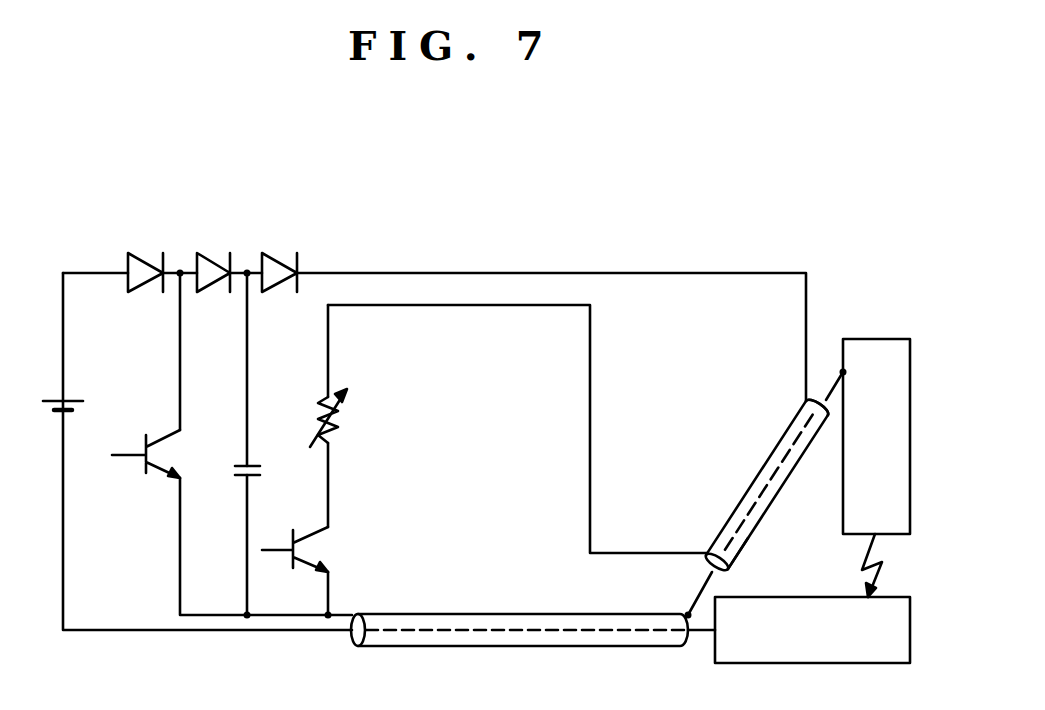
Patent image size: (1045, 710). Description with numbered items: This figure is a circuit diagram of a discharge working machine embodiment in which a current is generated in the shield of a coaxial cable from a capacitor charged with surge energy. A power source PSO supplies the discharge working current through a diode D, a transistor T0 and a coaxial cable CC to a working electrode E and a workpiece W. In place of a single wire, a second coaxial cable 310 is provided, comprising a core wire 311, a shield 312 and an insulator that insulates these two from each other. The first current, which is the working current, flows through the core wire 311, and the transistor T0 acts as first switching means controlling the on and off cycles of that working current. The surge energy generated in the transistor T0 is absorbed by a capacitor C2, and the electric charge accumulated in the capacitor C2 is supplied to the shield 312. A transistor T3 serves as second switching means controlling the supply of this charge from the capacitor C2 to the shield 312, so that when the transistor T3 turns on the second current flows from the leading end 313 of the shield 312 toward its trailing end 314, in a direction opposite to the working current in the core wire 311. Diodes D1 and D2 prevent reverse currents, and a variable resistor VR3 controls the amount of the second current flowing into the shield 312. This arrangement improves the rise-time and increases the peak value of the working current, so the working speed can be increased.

The diode D is at (140, 262).
The diode D1 is at (210, 262).
The diode D2 is at (285, 262).
The power source PSO is at (72, 395).
The transistor T0 is at (175, 450).
The capacitor C2 is at (254, 462).
The variable resistor VR3 is at (360, 406).
The transistor T3 is at (322, 552).
The coaxial cable CC is at (465, 614).
The second coaxial cable 310 is at (780, 445).
The core wire 311 is at (742, 495).
The shield 312 is at (758, 523).
The leading end 313 is at (808, 400).
The trailing end 314 is at (710, 555).
The working electrode E is at (897, 339).
The workpiece W is at (900, 597).